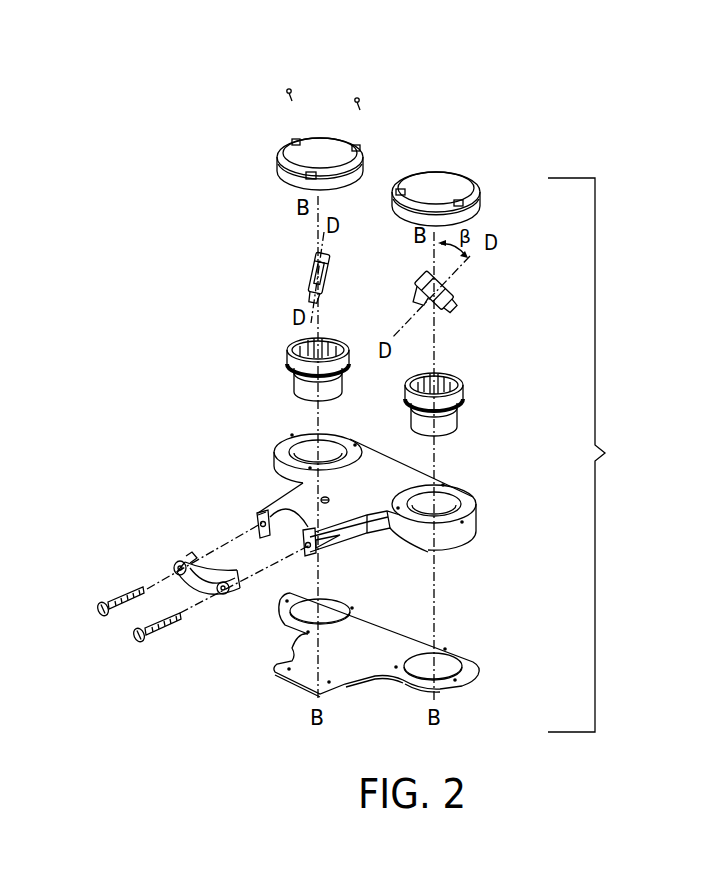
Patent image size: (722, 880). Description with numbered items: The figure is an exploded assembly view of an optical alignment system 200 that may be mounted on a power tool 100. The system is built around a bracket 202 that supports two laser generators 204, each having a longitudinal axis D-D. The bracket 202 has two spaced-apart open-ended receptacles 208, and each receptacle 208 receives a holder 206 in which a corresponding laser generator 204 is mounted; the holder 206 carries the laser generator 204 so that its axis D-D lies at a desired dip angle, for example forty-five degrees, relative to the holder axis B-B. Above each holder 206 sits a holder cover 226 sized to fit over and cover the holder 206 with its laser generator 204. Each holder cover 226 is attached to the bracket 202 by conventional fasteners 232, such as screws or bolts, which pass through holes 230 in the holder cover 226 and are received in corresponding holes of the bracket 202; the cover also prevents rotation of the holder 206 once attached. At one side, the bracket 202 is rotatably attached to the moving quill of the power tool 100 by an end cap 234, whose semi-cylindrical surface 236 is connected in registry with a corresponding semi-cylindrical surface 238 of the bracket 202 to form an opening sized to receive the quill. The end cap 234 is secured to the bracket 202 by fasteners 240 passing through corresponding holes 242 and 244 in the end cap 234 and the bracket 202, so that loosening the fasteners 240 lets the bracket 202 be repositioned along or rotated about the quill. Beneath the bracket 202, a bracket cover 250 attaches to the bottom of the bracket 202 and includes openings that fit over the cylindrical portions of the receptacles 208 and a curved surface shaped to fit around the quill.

The power tool 100 is at (0, 150).
The optical alignment system 200 is at (612, 430).
The bracket 202 is at (190, 462).
The laser generator 204 is at (303, 279).
The holder 206 is at (281, 373).
The receptacle 208 is at (290, 438).
The holder cover 226 is at (250, 178).
The hole 230 is at (297, 141).
The fastener 232 is at (292, 92).
The end cap 234 is at (127, 624).
The semi-cylindrical surface 236 is at (178, 560).
The semi-cylindrical surface 238 is at (256, 520).
The fastener 240 is at (163, 628).
The hole 242 is at (223, 600).
The hole 244 is at (168, 570).
The bracket cover 250 is at (348, 696).